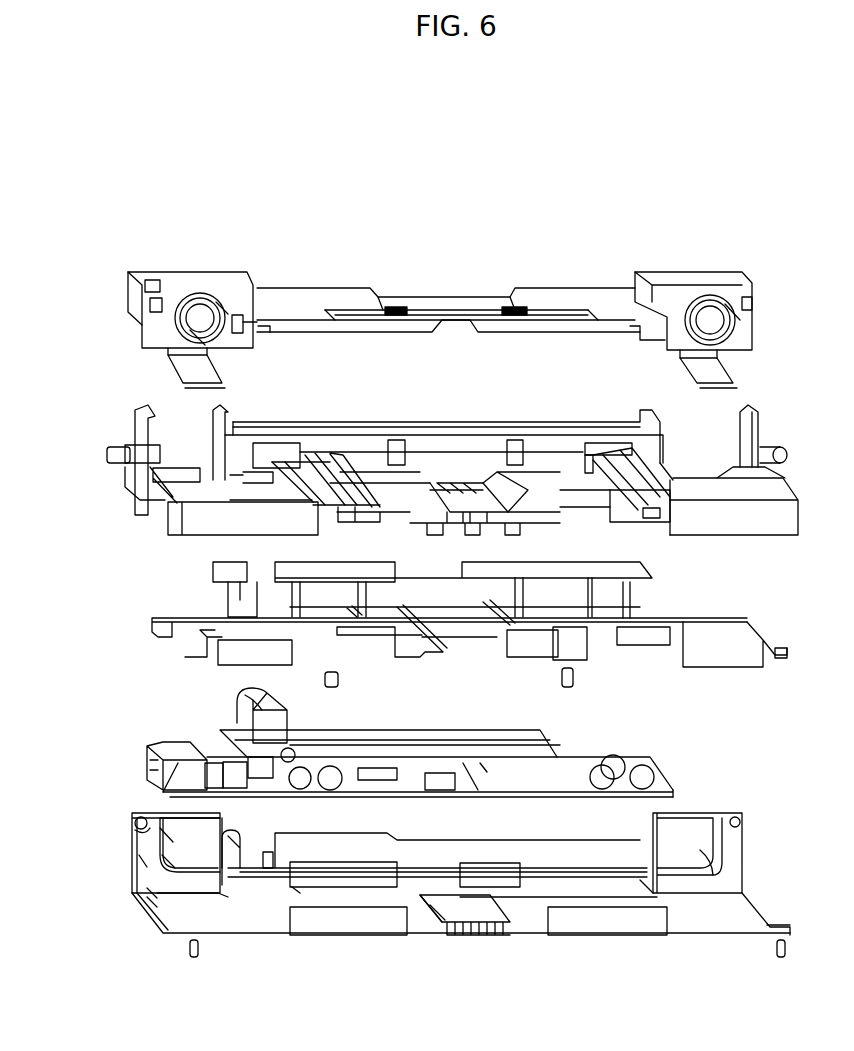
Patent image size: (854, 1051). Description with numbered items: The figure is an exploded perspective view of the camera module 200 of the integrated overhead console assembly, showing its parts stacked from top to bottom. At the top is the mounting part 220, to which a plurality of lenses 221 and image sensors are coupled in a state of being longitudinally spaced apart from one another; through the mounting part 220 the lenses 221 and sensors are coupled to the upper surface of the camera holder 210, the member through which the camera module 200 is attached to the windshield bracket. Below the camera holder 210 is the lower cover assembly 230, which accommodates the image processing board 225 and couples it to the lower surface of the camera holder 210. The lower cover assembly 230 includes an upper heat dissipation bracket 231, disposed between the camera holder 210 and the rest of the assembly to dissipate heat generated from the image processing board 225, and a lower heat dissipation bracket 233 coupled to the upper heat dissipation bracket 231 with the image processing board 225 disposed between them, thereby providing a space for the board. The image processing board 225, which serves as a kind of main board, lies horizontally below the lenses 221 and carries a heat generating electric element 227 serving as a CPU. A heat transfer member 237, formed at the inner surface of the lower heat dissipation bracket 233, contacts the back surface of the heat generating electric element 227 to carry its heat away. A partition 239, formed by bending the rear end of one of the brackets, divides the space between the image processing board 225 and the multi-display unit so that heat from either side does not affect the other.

The camera module 200 is at (100, 192).
The mounting part 220 is at (452, 300).
The lenses 221 is at (185, 320).
The camera holder 210 is at (168, 470).
The lower cover assembly 230 is at (80, 736).
The upper heat dissipation bracket 231 is at (155, 630).
The lower heat dissipation bracket 233 is at (132, 830).
The image processing board 225 is at (537, 773).
The heat generating electric element 227 is at (447, 770).
The heat transfer member 237 is at (455, 920).
The partition 239 is at (693, 848).